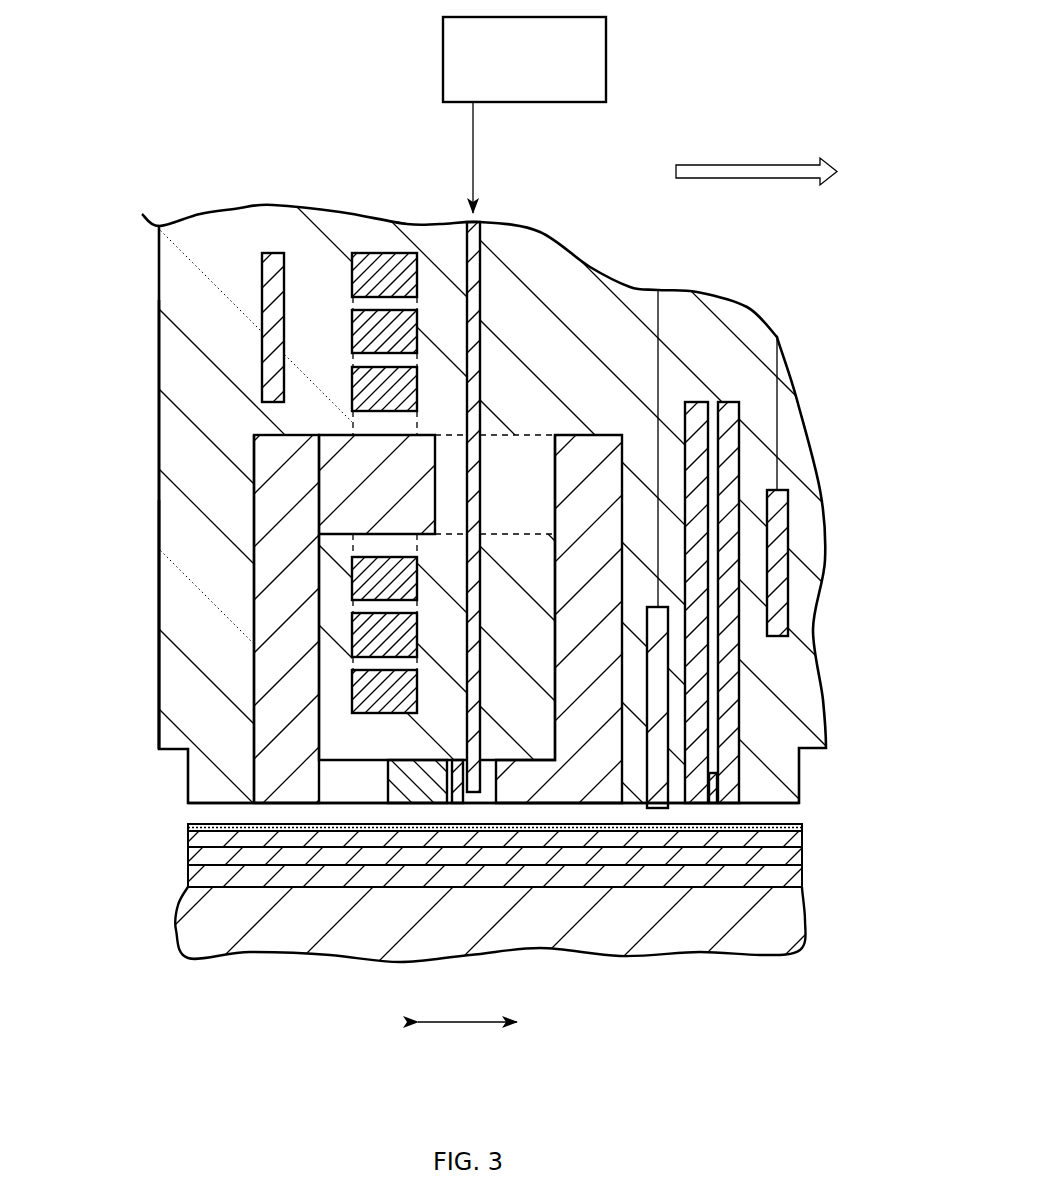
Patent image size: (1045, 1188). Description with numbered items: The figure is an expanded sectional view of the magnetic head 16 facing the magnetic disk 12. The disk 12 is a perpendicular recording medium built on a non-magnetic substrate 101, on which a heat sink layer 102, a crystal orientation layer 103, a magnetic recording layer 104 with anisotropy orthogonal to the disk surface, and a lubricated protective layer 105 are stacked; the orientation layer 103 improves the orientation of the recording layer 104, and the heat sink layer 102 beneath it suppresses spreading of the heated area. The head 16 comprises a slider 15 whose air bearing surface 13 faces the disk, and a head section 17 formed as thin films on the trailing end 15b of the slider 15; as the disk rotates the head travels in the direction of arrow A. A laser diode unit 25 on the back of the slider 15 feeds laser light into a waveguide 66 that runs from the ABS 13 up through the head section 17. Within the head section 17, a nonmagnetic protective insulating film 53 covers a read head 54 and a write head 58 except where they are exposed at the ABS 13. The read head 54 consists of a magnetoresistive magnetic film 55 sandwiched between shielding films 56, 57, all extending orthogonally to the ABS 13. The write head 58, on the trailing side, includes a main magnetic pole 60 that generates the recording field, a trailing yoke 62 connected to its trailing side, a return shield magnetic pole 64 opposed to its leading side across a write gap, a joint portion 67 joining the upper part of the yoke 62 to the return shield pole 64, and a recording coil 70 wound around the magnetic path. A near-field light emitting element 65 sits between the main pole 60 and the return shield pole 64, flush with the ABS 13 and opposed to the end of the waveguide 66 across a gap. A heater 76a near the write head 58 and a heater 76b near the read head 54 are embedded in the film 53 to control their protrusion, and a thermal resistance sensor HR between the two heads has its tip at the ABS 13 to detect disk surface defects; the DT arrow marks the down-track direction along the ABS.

The magnetic disk 12 is at (176, 940).
The air bearing surface 13 is at (792, 804).
The slider 15 is at (175, 467).
The trailing end 15b is at (159, 528).
The magnetic head 16 is at (191, 184).
The head section 17 is at (602, 338).
The laser diode unit 25 is at (443, 61).
The protective insulating film 53 is at (173, 311).
The read head 54 is at (572, 500).
The magnetic film 55 is at (713, 772).
The shielding film 56 is at (685, 427).
The shielding film 57 is at (739, 421).
The write head 58 is at (234, 466).
The main magnetic pole 60 is at (415, 792).
The trailing yoke 62 is at (280, 792).
The return shield magnetic pole 64 is at (590, 792).
The near-field light emitting element 65 is at (458, 792).
The waveguide 66 is at (480, 297).
The joint portion 67 is at (343, 448).
The recording coil 70 is at (352, 386).
The heater 76a is at (262, 283).
The heater 76b is at (788, 518).
The substrate 101 is at (792, 906).
The heat sink layer 102 is at (792, 876).
The crystal orientation layer 103 is at (792, 856).
The magnetic recording layer 104 is at (792, 839).
The protective layer 105 is at (792, 826).
The head travel direction A is at (756, 160).
The thermal resistance sensor HR is at (657, 810).
The down-track direction DT is at (467, 1043).